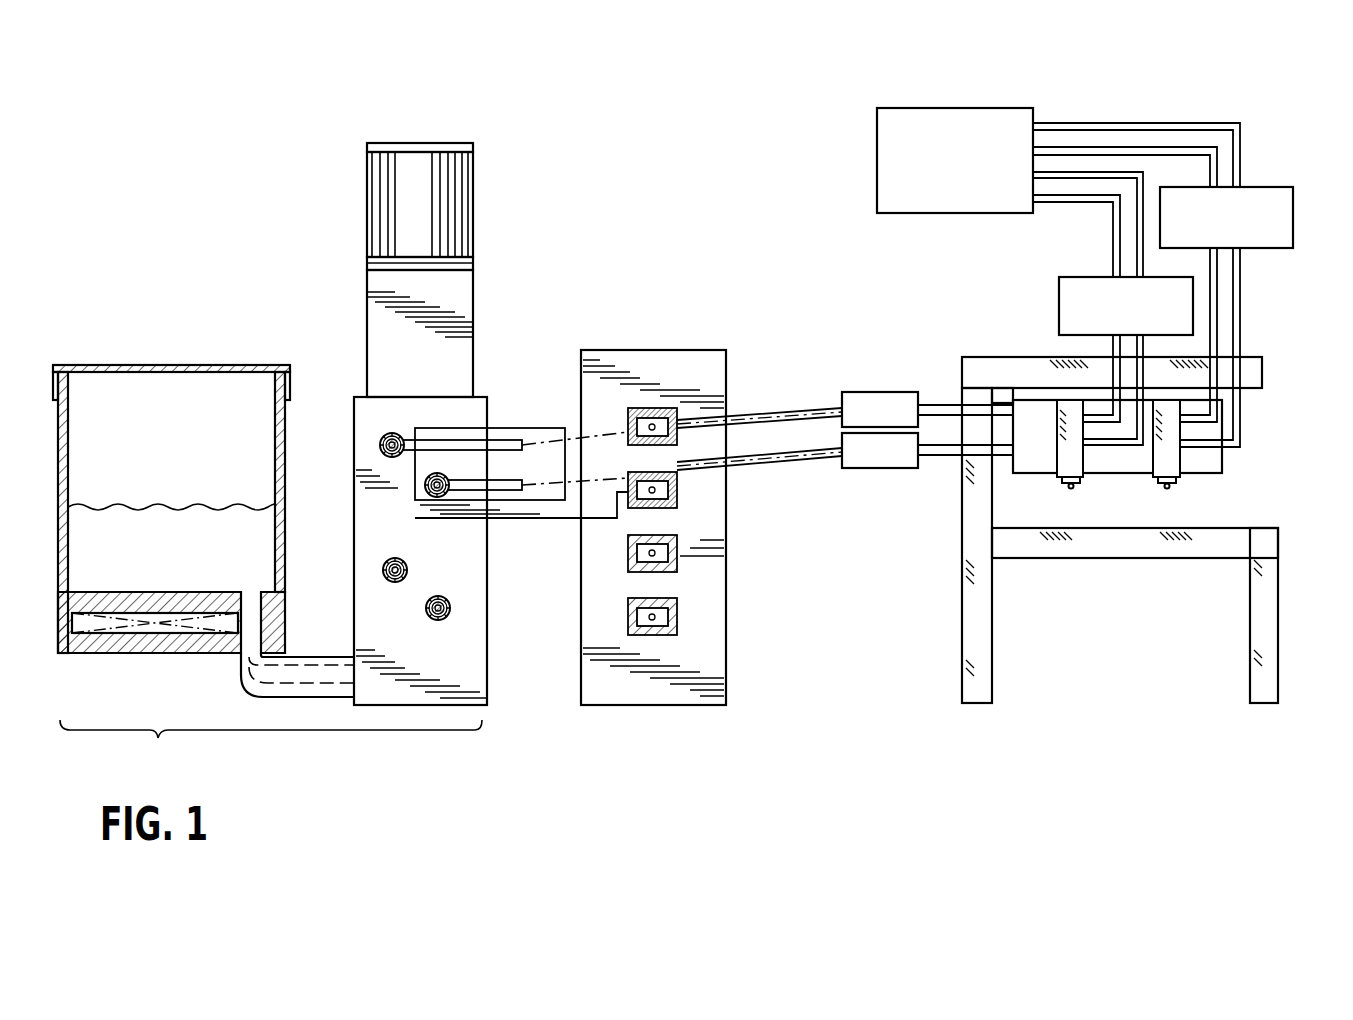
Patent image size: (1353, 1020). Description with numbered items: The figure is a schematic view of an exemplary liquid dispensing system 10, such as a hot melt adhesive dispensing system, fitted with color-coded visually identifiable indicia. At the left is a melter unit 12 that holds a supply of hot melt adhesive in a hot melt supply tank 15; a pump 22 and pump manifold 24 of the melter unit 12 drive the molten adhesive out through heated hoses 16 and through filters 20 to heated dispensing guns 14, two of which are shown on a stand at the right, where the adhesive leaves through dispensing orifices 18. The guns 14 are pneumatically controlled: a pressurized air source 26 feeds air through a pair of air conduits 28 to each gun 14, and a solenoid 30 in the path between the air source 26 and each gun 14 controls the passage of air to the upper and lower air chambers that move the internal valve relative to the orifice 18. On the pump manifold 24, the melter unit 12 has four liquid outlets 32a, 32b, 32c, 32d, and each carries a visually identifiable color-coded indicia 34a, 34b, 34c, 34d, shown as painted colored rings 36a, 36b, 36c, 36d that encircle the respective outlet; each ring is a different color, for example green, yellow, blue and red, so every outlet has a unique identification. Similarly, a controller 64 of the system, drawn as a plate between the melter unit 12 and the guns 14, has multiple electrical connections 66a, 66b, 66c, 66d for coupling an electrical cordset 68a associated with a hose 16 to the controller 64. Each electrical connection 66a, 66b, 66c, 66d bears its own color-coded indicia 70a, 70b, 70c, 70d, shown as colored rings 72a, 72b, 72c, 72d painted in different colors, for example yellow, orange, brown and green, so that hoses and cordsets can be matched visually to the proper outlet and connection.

The liquid dispensing system 10 is at (206, 98).
The melter unit 12 is at (157, 740).
The dispensing guns 14 is at (1300, 425).
The hot melt supply tank 15 is at (82, 346).
The heated hoses 16 is at (600, 477).
The dispensing orifices 18 is at (1068, 488).
The filters 20 is at (862, 392).
The pump 22 is at (473, 210).
The pump manifold 24 is at (487, 692).
The pressurized air source 26 is at (877, 152).
The air conduits 28 is at (1108, 190).
The solenoid 30 is at (1293, 220).
The liquid outlet 32a is at (376, 444).
The liquid outlet 32b is at (444, 474).
The liquid outlet 32c is at (380, 568).
The liquid outlet 32d is at (430, 624).
The color-coded indicia 34a is at (404, 460).
The color-coded indicia 34b is at (452, 478).
The color-coded indicia 34c is at (400, 584).
The color-coded indicia 34d is at (452, 618).
The colored ring 36a is at (390, 432).
The colored ring 36b is at (433, 473).
The colored ring 36c is at (408, 568).
The colored ring 36d is at (452, 604).
The controller 64 is at (581, 653).
The electrical connection 66a is at (682, 424).
The electrical connection 66b is at (682, 490).
The electrical connection 66c is at (682, 553).
The electrical connection 66d is at (682, 617).
The electrical cordset 68a is at (518, 520).
The color-coded indicia 70a is at (660, 407).
The color-coded indicia 70b is at (675, 500).
The color-coded indicia 70c is at (672, 566).
The color-coded indicia 70d is at (665, 636).
The colored ring 72a is at (638, 410).
The colored ring 72b is at (640, 510).
The colored ring 72c is at (640, 572).
The colored ring 72d is at (640, 636).